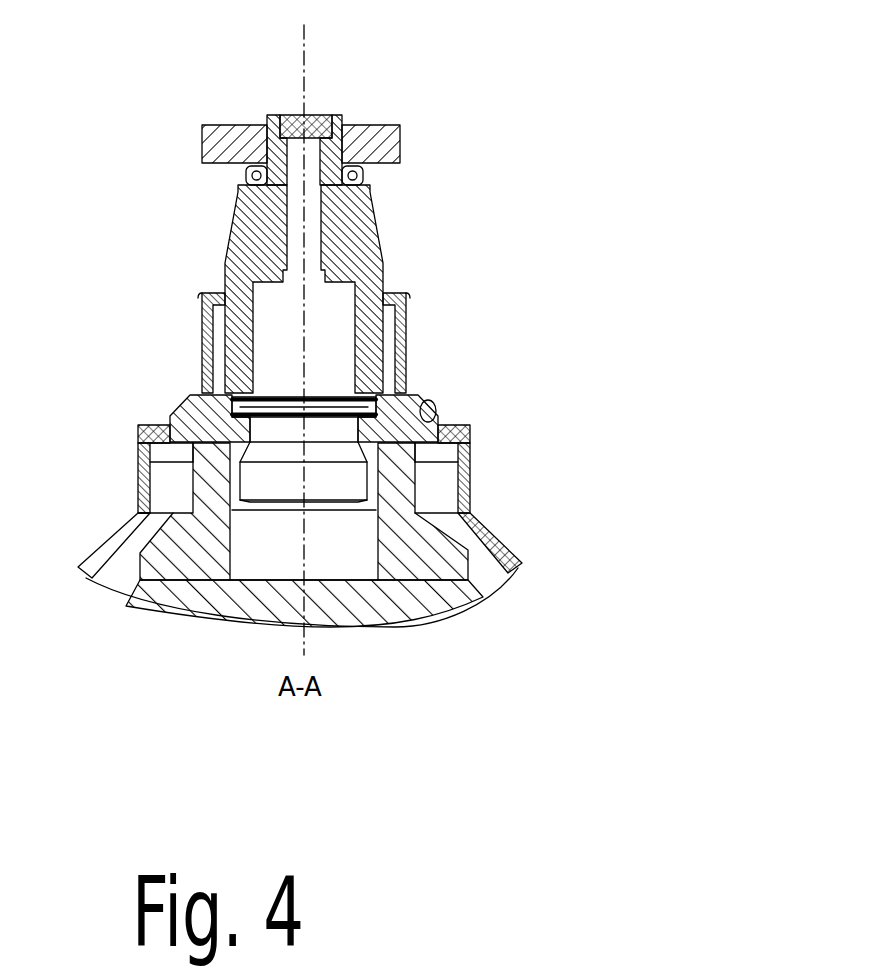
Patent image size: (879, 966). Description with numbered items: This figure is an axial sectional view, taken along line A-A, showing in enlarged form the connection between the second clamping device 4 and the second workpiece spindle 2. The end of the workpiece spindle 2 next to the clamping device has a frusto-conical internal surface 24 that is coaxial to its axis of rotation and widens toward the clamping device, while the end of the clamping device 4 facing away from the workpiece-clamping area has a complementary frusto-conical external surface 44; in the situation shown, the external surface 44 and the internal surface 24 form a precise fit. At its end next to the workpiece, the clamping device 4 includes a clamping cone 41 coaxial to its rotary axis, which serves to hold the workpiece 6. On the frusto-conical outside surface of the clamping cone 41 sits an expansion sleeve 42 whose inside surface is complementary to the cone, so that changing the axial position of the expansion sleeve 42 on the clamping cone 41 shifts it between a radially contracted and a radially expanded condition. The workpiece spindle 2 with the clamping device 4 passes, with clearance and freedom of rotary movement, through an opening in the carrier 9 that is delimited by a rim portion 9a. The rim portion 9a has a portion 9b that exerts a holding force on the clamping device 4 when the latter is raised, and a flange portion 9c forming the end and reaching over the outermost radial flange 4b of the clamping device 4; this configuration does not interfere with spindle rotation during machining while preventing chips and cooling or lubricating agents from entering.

The second workpiece spindle 2 is at (483, 593).
The second clamping device 4 is at (407, 335).
The outermost radial flange 4b is at (433, 418).
The workpiece 6 is at (402, 122).
The carrier 9 is at (397, 492).
The rim portion 9a is at (470, 482).
The portion exerting a holding force 9b is at (471, 440).
The flange portion 9c is at (441, 404).
The internal surface 24 is at (388, 488).
The clamping cone 41 is at (372, 234).
The expansion sleeve 42 is at (333, 114).
The external surface 44 is at (226, 480).